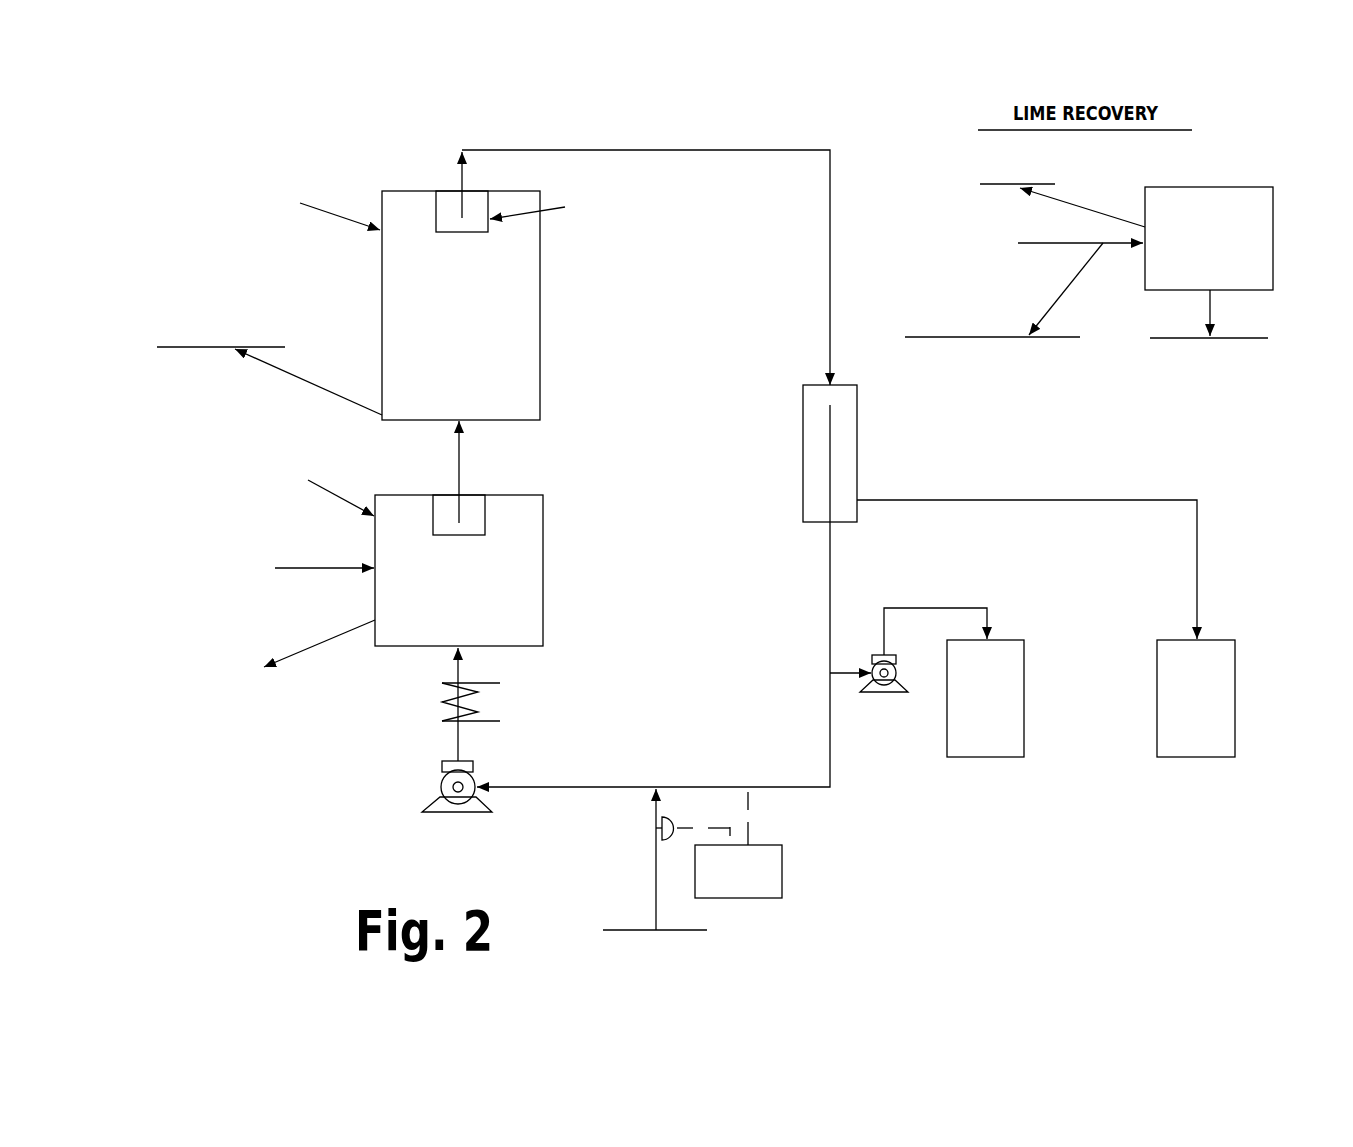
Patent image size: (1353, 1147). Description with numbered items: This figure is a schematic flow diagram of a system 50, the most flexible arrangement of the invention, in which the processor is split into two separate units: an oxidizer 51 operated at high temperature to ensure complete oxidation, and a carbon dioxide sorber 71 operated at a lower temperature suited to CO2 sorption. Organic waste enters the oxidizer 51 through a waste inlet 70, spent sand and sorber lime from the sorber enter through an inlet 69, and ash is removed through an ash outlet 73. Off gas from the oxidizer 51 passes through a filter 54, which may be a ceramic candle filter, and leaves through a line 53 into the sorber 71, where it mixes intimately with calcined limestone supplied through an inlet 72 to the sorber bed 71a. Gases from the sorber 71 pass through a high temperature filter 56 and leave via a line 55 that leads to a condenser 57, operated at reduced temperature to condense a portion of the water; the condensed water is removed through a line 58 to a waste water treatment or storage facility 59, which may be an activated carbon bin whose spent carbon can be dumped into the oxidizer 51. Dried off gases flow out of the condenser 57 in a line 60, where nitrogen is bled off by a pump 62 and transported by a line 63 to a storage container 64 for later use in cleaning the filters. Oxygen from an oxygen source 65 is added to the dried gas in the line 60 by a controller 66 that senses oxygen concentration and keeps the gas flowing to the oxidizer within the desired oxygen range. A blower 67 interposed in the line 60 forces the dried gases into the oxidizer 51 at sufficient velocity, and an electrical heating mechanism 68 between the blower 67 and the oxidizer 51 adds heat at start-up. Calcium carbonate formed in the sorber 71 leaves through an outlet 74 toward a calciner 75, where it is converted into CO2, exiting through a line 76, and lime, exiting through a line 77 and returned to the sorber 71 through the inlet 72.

The system 50 is at (332, 129).
The oxidizer 51 is at (543, 570).
The line 53 is at (460, 477).
The filter 54 is at (487, 515).
The line 55 is at (465, 186).
The high temperature filter 56 is at (638, 232).
The condenser 57 is at (857, 455).
The line 58 is at (1027, 500).
The waste water treatment or storage facility 59 is at (1235, 697).
The line 60 is at (830, 567).
The pump 62 is at (884, 692).
The line 63 is at (937, 608).
The storage container 64 is at (1024, 697).
The oxygen source 65 is at (705, 947).
The controller 66 is at (782, 872).
The blower 67 is at (492, 805).
The electrical heating mechanism 68 is at (478, 683).
The inlet 69 is at (325, 488).
The waste inlet 70 is at (297, 567).
The carbon dioxide sorber 71 is at (540, 292).
The sorber bed 71a is at (498, 373).
The inlet 72 is at (322, 210).
The ash outlet 73 is at (308, 650).
The outlet 74 is at (318, 386).
The calciner 75 is at (1212, 187).
The line 76 is at (1085, 202).
The line 77 is at (1212, 300).